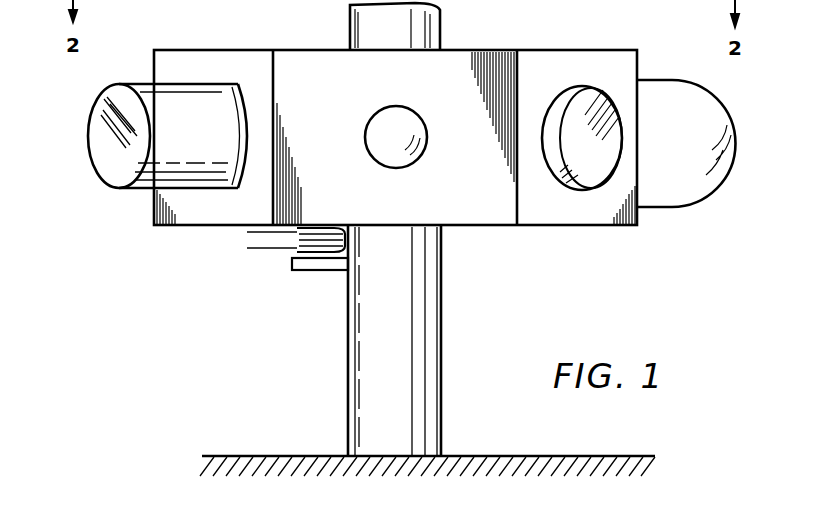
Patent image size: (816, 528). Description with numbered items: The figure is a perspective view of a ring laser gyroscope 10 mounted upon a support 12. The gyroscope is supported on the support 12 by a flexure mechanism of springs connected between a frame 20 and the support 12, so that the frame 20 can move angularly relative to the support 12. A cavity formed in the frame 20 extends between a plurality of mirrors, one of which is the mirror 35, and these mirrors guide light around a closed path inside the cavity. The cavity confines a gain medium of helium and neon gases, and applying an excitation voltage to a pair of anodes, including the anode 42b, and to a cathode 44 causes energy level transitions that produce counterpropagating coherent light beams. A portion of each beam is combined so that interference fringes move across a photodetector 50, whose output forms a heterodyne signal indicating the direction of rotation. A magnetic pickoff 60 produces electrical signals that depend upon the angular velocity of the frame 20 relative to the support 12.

The ring laser gyroscope 10 is at (143, 243).
The support 12 is at (348, 380).
The frame 20 is at (487, 216).
The mirror 35 is at (604, 100).
The anode 42b is at (386, 116).
The cathode 44 is at (693, 197).
The photodetector 50 is at (100, 109).
The magnetic pickoff 60 is at (280, 257).